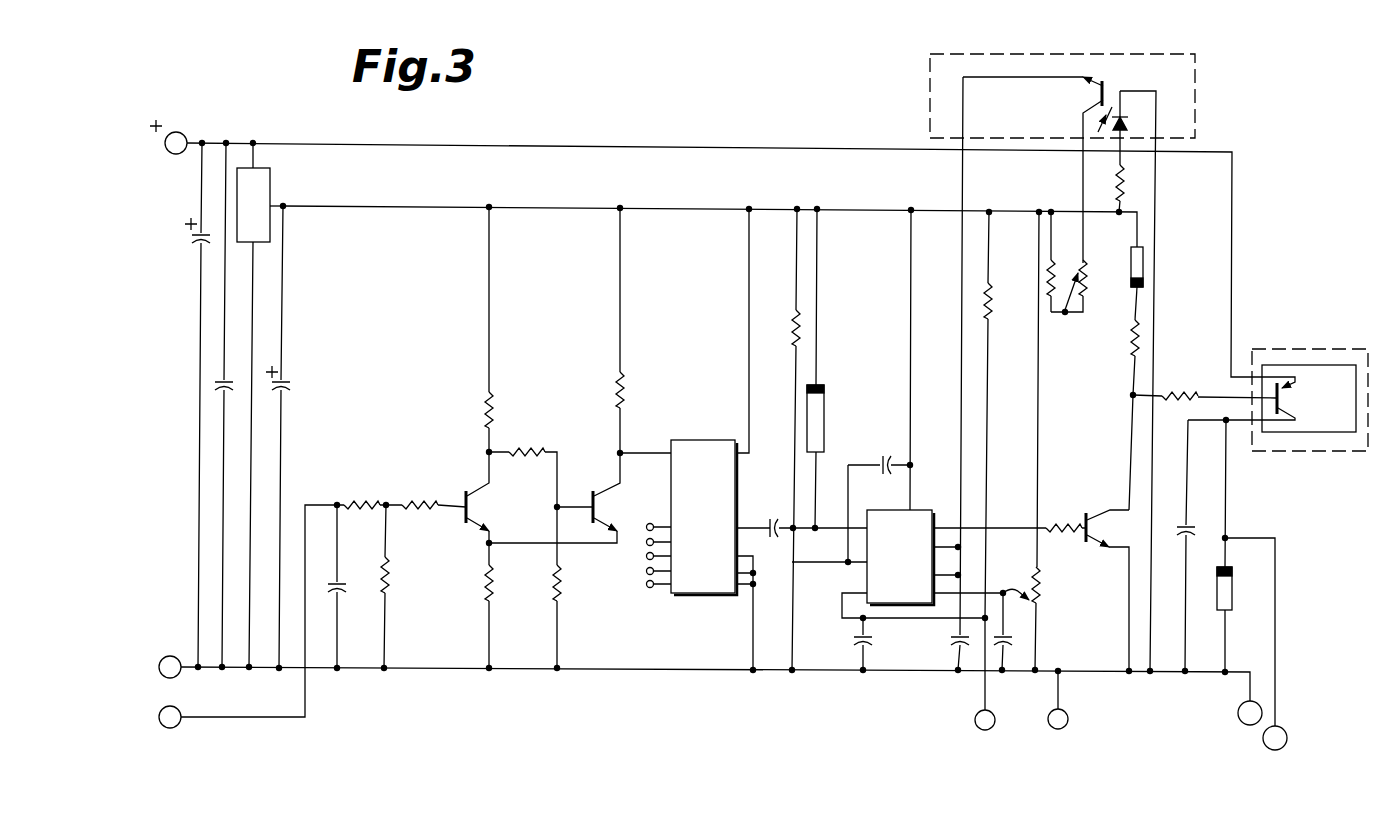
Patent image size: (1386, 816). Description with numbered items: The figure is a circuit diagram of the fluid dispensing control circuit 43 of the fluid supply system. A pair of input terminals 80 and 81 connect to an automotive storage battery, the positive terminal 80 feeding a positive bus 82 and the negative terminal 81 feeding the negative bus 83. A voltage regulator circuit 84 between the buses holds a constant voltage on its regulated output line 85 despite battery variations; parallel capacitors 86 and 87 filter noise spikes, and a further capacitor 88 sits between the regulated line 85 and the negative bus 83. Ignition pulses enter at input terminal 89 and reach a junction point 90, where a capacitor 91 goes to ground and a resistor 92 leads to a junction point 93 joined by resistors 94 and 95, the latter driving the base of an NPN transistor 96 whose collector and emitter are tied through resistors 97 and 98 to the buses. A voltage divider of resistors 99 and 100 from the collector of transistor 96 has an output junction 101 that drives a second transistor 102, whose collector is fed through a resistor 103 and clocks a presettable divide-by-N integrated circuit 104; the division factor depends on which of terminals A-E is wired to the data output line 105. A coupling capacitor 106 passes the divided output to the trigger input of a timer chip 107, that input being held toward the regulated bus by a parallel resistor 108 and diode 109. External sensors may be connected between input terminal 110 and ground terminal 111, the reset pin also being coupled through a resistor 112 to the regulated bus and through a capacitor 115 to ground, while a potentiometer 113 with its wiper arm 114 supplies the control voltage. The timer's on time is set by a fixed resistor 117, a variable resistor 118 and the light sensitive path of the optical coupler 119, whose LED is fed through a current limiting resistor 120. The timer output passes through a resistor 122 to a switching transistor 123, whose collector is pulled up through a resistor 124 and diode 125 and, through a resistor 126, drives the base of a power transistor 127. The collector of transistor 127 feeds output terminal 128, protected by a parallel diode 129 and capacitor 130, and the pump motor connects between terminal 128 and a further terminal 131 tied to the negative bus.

The control circuit 43 is at (757, 145).
The positive input terminal 80 is at (188, 136).
The negative input terminal 81 is at (173, 656).
The positive bus 82 is at (532, 147).
The negative bus 83 is at (625, 671).
The voltage regulator circuit 84 is at (266, 198).
The regulated voltage line 85 is at (684, 206).
The capacitor 86 is at (196, 247).
The capacitor 87 is at (218, 383).
The capacitor 88 is at (289, 385).
The input terminal 89 is at (178, 726).
The junction point 90 is at (337, 504).
The capacitor 91 is at (340, 580).
The resistor 92 is at (353, 494).
The junction point 93 is at (386, 500).
The resistor 94 is at (388, 578).
The resistor 95 is at (426, 495).
The NPN transistor 96 is at (480, 511).
The resistor 97 is at (492, 408).
The resistor 98 is at (492, 584).
The resistor 99 is at (509, 448).
The resistor 100 is at (560, 584).
The output junction 101 is at (560, 500).
The transistor 102 is at (604, 505).
The resistor 103 is at (622, 394).
The presettable divide-by-N integrated circuit 104 is at (700, 440).
The data output line 105 is at (748, 532).
The coupling capacitor 106 is at (770, 524).
The timer chip 107 is at (920, 518).
The resistor 108 is at (800, 330).
The diode 109 is at (825, 402).
The input terminal 110 is at (973, 720).
The ground terminal 111 is at (1069, 720).
The resistor 112 is at (990, 303).
The potentiometer 113 is at (1041, 585).
The wiper arm 114 is at (1004, 584).
The capacitor 115 is at (855, 635).
The fixed resistor 117 is at (1047, 264).
The variable resistor 118 is at (1073, 270).
The optical coupler 119 is at (1138, 54).
The current limiting resistor 120 is at (1127, 190).
The resistor 122 is at (1059, 520).
The transistor 123 is at (1097, 521).
The resistor 124 is at (1130, 339).
The diode 125 is at (1127, 281).
The resistor 126 is at (1179, 388).
The semiconductor current control device 127 is at (1288, 401).
The output terminal 128 is at (1287, 730).
The diode 129 is at (1238, 586).
The capacitor 130 is at (1196, 522).
The terminal 131 is at (1236, 712).